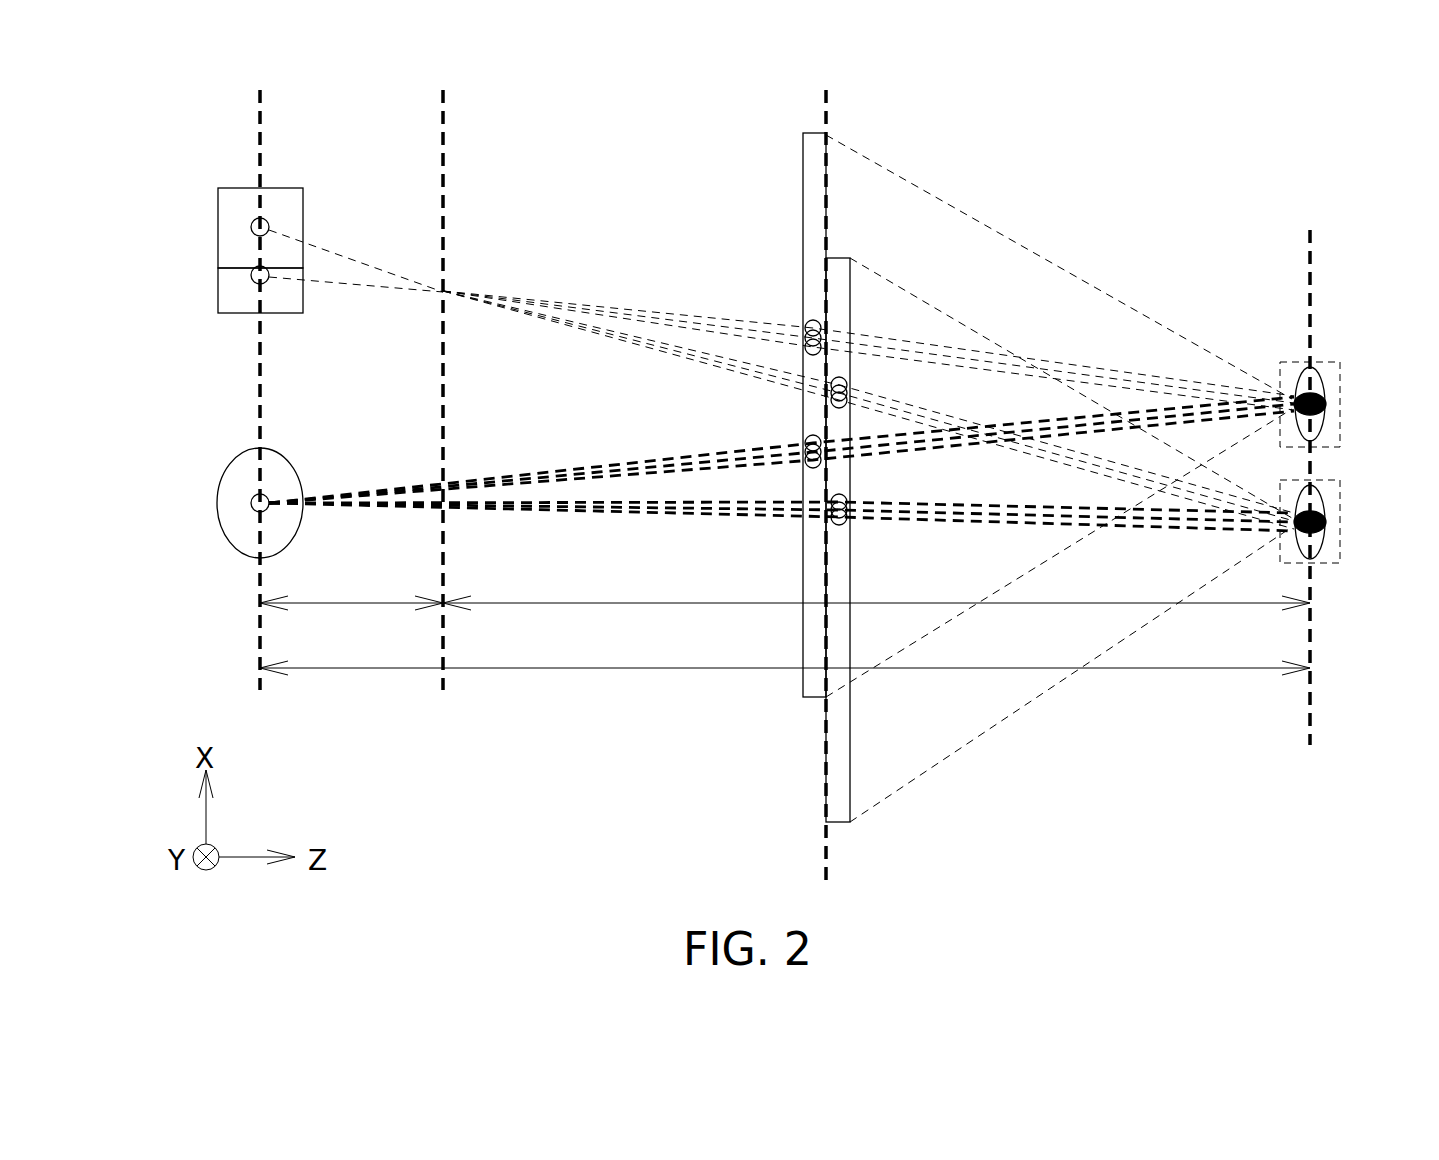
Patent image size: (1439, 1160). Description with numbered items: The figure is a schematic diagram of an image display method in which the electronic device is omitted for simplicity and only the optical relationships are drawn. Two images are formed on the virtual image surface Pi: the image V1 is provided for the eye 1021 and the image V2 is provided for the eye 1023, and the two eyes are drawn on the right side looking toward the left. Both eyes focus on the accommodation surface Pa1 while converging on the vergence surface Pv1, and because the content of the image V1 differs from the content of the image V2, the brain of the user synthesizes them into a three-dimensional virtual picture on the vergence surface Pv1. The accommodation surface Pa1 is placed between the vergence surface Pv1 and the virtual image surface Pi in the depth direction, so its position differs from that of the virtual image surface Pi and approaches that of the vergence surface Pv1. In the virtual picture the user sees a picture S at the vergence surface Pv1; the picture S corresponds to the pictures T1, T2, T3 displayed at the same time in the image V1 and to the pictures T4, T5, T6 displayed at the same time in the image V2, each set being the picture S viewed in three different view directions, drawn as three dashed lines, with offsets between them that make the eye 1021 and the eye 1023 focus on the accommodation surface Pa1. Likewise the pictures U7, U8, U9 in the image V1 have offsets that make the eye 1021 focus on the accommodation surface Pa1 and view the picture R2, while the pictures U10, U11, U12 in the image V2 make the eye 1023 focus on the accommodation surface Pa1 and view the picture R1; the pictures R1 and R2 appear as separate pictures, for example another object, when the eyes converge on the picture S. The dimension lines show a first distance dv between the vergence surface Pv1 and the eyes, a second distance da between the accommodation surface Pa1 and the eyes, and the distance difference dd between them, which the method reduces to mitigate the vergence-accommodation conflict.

The vergence surface Pv1 is at (263, 117).
The accommodation surface Pa1 is at (446, 117).
The virtual image surface Pi is at (829, 117).
The picture R1 is at (218, 230).
The picture R2 is at (218, 291).
The picture S is at (218, 503).
The image V1 is at (803, 157).
The image V2 is at (852, 720).
The picture U7 is at (811, 320).
The picture U8 is at (805, 338).
The picture U9 is at (805, 348).
The picture U10 is at (842, 377).
The picture U11 is at (847, 394).
The picture U12 is at (847, 400).
The picture T1 is at (811, 435).
The picture T2 is at (805, 452).
The picture T3 is at (807, 465).
The picture T4 is at (845, 499).
The picture T5 is at (846, 514).
The picture T6 is at (840, 525).
The eye 1021 is at (1326, 404).
The eye 1023 is at (1326, 522).
The distance difference Δd dd is at (351, 591).
The second distance da is at (876, 591).
The first distance dv is at (785, 655).